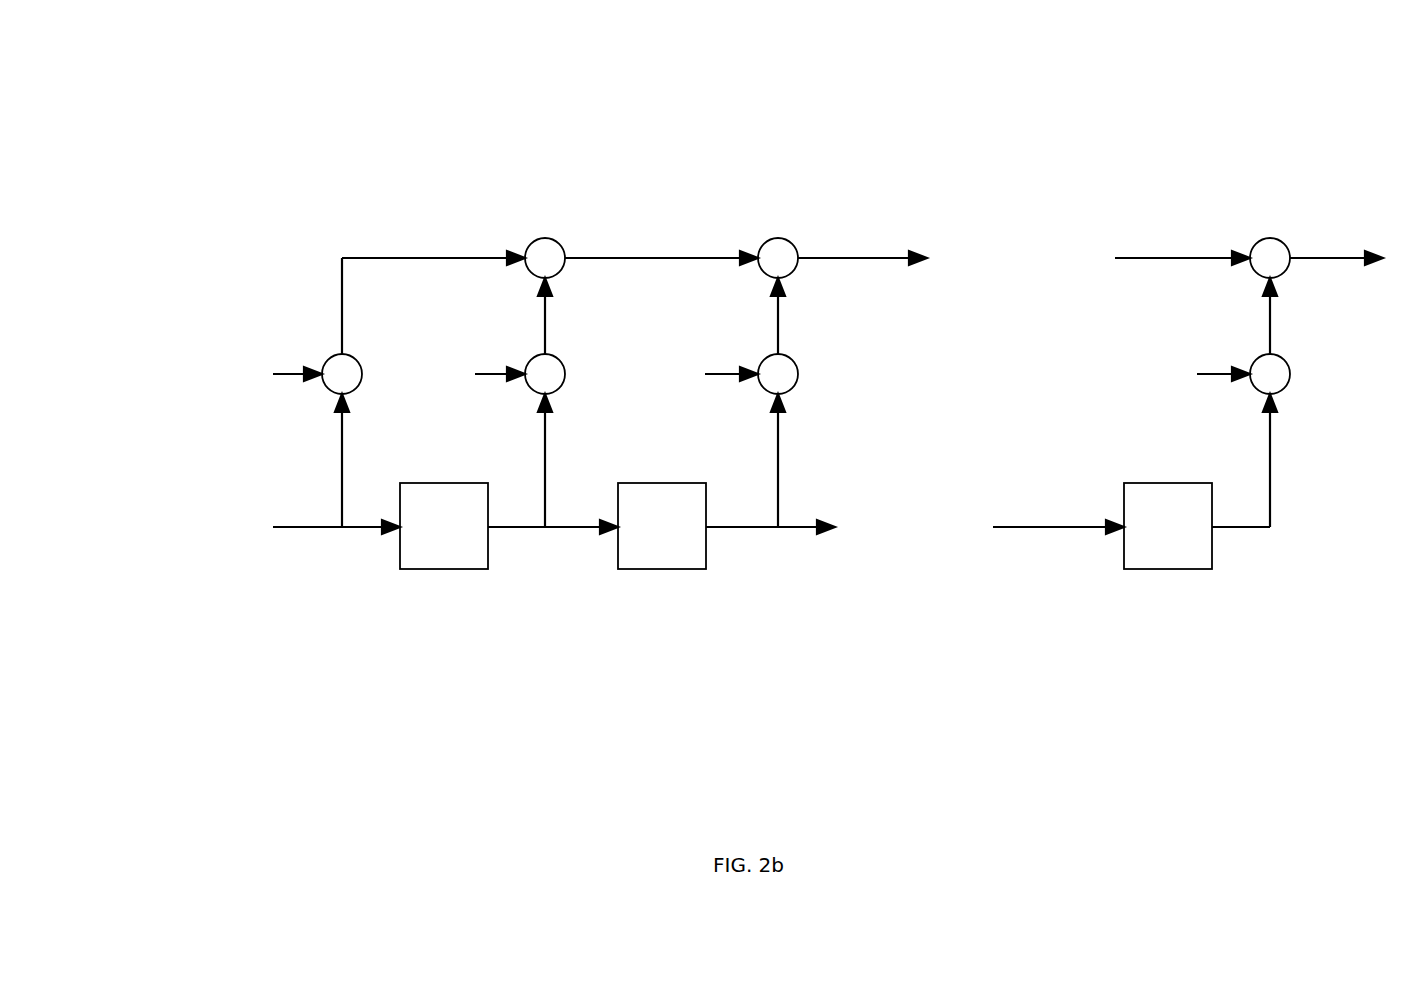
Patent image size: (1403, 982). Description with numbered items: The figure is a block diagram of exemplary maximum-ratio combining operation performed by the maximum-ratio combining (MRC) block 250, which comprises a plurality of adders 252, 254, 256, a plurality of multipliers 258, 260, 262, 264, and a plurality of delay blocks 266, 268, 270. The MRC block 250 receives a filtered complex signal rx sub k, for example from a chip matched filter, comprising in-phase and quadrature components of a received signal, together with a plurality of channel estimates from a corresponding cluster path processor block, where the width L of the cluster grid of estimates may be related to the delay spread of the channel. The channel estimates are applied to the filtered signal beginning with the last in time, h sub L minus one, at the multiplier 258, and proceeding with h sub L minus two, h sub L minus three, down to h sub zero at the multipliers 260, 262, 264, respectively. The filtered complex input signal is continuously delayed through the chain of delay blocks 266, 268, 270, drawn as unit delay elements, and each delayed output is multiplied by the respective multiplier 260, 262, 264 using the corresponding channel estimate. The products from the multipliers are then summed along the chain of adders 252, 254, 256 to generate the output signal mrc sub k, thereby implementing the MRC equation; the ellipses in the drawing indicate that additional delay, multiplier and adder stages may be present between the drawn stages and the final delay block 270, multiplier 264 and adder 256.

The maximum-ratio combining block 250 is at (338, 103).
The adder 252 is at (533, 273).
The adder 254 is at (765, 273).
The adder 256 is at (1257, 273).
The multiplier block 258 is at (330, 390).
The multiplier block 260 is at (533, 390).
The multiplier block 262 is at (766, 390).
The multiplier block 264 is at (1257, 390).
The delay block 266 is at (430, 571).
The delay block 268 is at (637, 571).
The delay block 270 is at (1147, 571).